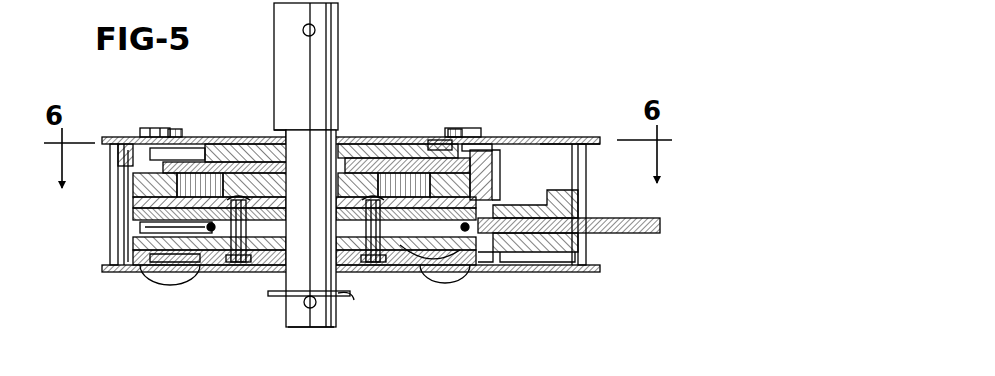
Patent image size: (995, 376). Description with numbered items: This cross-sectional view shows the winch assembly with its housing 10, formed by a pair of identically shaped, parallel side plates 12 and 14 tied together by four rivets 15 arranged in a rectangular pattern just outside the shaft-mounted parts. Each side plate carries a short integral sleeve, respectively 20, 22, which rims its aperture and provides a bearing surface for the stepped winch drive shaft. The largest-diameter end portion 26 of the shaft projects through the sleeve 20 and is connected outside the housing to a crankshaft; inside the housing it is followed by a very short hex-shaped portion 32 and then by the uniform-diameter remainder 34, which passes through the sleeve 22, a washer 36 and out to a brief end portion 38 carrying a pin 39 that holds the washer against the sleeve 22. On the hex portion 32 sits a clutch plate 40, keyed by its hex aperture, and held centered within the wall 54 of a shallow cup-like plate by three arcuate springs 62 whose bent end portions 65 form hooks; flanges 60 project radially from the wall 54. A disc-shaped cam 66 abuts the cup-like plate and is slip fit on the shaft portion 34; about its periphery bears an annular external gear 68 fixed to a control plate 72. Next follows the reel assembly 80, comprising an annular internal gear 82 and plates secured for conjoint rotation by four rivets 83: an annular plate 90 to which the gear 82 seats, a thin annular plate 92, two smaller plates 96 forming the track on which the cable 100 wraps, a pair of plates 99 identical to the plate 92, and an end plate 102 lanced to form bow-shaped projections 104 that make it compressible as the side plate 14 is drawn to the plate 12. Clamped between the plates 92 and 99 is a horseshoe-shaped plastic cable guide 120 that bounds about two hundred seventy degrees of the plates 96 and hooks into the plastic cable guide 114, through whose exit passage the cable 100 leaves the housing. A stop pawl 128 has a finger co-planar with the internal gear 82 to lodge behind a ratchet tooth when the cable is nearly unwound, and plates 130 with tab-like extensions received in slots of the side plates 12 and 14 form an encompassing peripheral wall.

The housing 10 is at (128, 134).
The side plate 12 is at (597, 136).
The side plate 14 is at (515, 273).
The rivets 15 is at (159, 128).
The sleeve 20 is at (341, 122).
The sleeve 22 is at (359, 299).
The end portion 26 is at (334, 37).
The shaft portion 32 is at (293, 130).
The shaft portion 34 is at (311, 228).
The washer 36 is at (278, 297).
The end portion 38 is at (316, 328).
The pin 39 is at (304, 306).
The clutch plate 40 is at (379, 128).
The wall 54 is at (125, 134).
The flange 60 is at (139, 134).
The springs 62 is at (433, 140).
The end portions 65 is at (222, 140).
The cam 66 is at (398, 133).
The annular external gear 68 is at (407, 141).
The control plate 72 is at (248, 143).
The reel assembly 80 is at (141, 258).
The annular internal gear 82 is at (135, 186).
The rivets 83 is at (243, 265).
The annular plate 90 is at (132, 210).
The annular plate 92 is at (501, 186).
The plates 96 is at (425, 268).
The plates 99 is at (140, 244).
The cable 100 is at (646, 234).
The plate 102 is at (216, 266).
The bow shaped projections 104 is at (190, 272).
The cable guide 114 is at (570, 263).
The cable guide 120 is at (130, 234).
The stop pawl 128 is at (498, 132).
The plates 130 is at (585, 170).